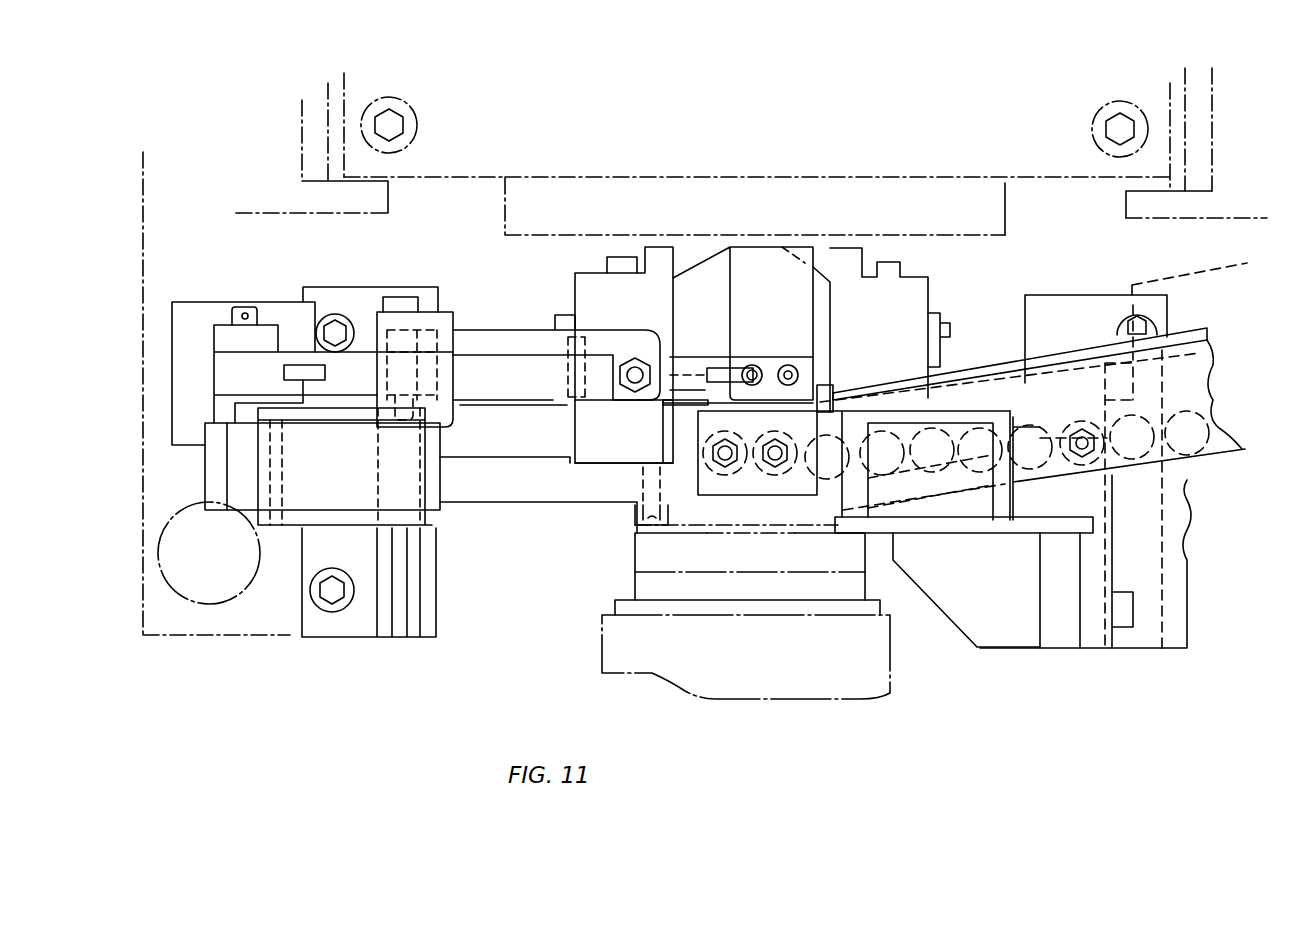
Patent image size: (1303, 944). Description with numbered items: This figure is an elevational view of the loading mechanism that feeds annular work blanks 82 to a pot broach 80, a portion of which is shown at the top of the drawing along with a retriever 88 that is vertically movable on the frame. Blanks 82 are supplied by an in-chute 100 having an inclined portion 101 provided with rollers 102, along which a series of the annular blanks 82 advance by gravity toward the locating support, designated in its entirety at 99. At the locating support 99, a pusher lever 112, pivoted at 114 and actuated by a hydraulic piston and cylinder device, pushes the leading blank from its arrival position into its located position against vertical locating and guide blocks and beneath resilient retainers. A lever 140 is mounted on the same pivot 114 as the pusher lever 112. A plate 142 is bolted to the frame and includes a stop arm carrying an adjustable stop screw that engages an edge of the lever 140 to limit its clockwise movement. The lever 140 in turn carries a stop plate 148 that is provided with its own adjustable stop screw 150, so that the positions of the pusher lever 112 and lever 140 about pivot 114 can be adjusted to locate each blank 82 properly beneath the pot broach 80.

The pot broach 80 is at (1005, 233).
The annular work blank 82 is at (1015, 373).
The retriever 88 is at (890, 665).
The locating support 99 is at (550, 279).
The in-chute 100 is at (1222, 360).
The inclined portion 101 is at (1223, 463).
The rollers 102 is at (1113, 455).
The pusher lever 112 is at (498, 353).
The pivot 114 is at (393, 288).
The lever 140 is at (597, 329).
The plate 142 is at (433, 373).
The stop plate 148 is at (622, 393).
The adjustable stop screw 150 is at (642, 370).